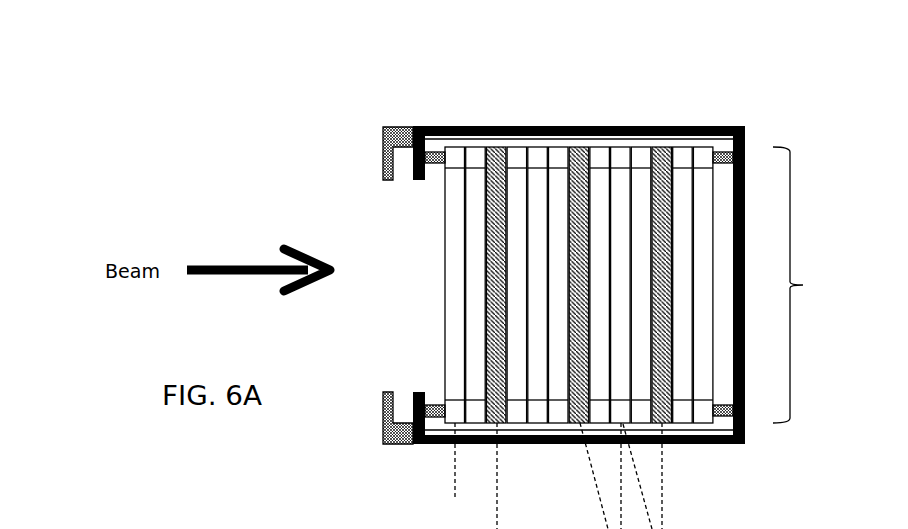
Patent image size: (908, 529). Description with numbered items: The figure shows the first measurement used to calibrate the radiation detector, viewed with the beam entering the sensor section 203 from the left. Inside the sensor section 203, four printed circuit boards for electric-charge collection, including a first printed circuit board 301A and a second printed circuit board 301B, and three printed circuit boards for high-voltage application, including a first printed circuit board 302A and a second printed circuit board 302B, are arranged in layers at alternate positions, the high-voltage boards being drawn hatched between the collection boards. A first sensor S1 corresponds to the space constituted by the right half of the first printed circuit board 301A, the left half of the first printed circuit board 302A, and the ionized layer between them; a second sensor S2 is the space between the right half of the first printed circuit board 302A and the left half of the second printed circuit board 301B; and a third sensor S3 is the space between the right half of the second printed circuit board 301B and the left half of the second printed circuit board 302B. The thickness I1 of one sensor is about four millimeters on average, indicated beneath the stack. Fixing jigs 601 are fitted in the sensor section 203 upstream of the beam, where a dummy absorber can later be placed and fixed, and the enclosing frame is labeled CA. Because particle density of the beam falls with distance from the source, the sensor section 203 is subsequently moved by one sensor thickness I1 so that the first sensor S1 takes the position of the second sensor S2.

The sensor section 203 is at (654, 284).
The first printed circuit board for electric-charge collection 301A is at (457, 227).
The second printed circuit board for electric-charge collection 301B is at (543, 165).
The first printed circuit board for high-voltage application 302A is at (492, 207).
The second printed circuit board for high-voltage application 302B is at (578, 227).
The fixing jigs 601 is at (403, 127).
The collimator CA is at (713, 128).
The first sensor S1 is at (492, 125).
The second sensor S2 is at (533, 125).
The third sensor S3 is at (573, 125).
The thickness of one sensor I1 is at (540, 484).